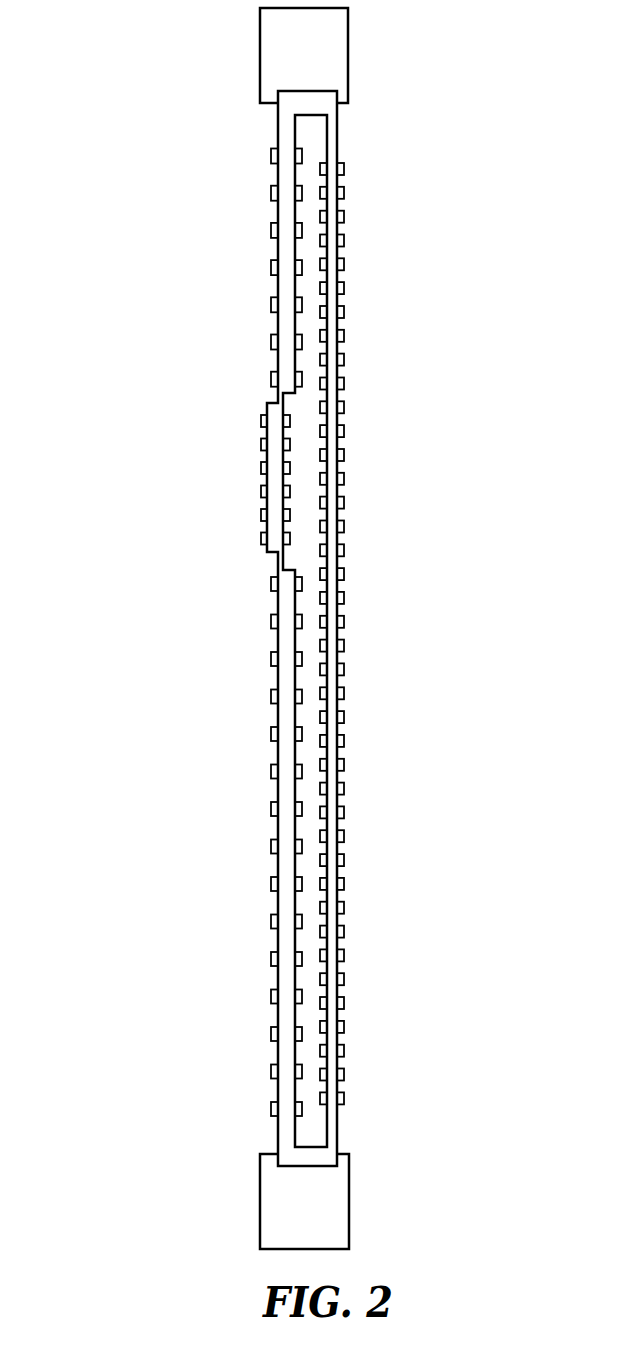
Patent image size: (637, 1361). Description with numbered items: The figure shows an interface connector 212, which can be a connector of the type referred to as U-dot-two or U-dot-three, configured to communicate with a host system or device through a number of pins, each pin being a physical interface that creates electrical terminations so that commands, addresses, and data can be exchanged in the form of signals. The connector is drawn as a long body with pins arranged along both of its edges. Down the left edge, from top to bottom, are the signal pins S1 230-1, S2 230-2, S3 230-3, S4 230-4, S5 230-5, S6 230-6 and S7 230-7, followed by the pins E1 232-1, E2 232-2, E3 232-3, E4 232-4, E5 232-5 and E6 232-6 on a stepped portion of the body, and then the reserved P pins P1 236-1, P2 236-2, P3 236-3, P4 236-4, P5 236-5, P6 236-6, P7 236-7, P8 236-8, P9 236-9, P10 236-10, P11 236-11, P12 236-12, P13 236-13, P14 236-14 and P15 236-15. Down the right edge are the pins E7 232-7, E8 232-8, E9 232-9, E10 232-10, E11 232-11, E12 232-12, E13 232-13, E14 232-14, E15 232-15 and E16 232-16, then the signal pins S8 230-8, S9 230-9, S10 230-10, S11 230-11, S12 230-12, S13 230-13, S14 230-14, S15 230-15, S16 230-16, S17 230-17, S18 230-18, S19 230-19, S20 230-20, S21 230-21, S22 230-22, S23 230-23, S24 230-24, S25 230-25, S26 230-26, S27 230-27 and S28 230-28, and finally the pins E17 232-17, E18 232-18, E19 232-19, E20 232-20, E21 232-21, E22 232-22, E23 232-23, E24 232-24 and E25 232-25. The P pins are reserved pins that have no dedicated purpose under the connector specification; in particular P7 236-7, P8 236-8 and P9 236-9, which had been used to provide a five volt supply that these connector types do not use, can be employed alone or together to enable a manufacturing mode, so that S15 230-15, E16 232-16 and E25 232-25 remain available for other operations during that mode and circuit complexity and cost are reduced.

The interface connector 212 is at (148, 32).
The S1 pin 230-1 is at (240, 158).
The S2 pin 230-2 is at (240, 195).
The S3 pin 230-3 is at (240, 232).
The S4 pin 230-4 is at (240, 269).
The S5 pin 230-5 is at (240, 306).
The S6 pin 230-6 is at (240, 344).
The S7 pin 230-7 is at (240, 381).
The S8 pin 230-8 is at (378, 410).
The S9 pin 230-9 is at (378, 434).
The S10 pin 230-10 is at (383, 458).
The S11 pin 230-11 is at (383, 482).
The S12 pin 230-12 is at (383, 506).
The S13 pin 230-13 is at (383, 530).
The S14 pin 230-14 is at (383, 553).
The S15 pin 230-15 is at (383, 577).
The S16 pin 230-16 is at (383, 601).
The S17 pin 230-17 is at (383, 625).
The S18 pin 230-18 is at (383, 649).
The S19 pin 230-19 is at (383, 672).
The S20 pin 230-20 is at (383, 696).
The S21 pin 230-21 is at (383, 720).
The S22 pin 230-22 is at (383, 744).
The S23 pin 230-23 is at (383, 768).
The S24 pin 230-24 is at (383, 792).
The S25 pin 230-25 is at (383, 815).
The S26 pin 230-26 is at (383, 839).
The S27 pin 230-27 is at (383, 863).
The S28 pin 230-28 is at (383, 887).
The E1 pin 232-1 is at (230, 423).
The E2 pin 232-2 is at (230, 446).
The E3 pin 232-3 is at (230, 470).
The E4 pin 232-4 is at (230, 494).
The E5 pin 232-5 is at (230, 517).
The E6 pin 232-6 is at (230, 540).
The E7 pin 232-7 is at (378, 172).
The E8 pin 232-8 is at (378, 196).
The E9 pin 232-9 is at (378, 220).
The E10 pin 232-10 is at (383, 244).
The E11 pin 232-11 is at (383, 267).
The E12 pin 232-12 is at (383, 291).
The E13 pin 232-13 is at (383, 315).
The E14 pin 232-14 is at (383, 339).
The E15 pin 232-15 is at (383, 363).
The E16 pin 232-16 is at (383, 386).
The E17 pin 232-17 is at (383, 911).
The E18 pin 232-18 is at (383, 935).
The E19 pin 232-19 is at (383, 958).
The E20 pin 232-20 is at (383, 982).
The E21 pin 232-21 is at (383, 1006).
The E22 pin 232-22 is at (383, 1030).
The E23 pin 232-23 is at (383, 1054).
The E24 pin 232-24 is at (383, 1078).
The E25 pin 232-25 is at (383, 1101).
The P1 pin 236-1 is at (240, 586).
The P2 pin 236-2 is at (240, 624).
The P3 pin 236-3 is at (240, 661).
The P4 pin 236-4 is at (240, 698).
The P5 pin 236-5 is at (240, 736).
The P6 pin 236-6 is at (240, 774).
The P7 pin 236-7 is at (240, 811).
The P8 pin 236-8 is at (240, 848).
The P9 pin 236-9 is at (240, 886).
The P10 pin 236-10 is at (236, 924).
The P11 pin 236-11 is at (236, 961).
The P12 pin 236-12 is at (236, 998).
The P13 pin 236-13 is at (236, 1036).
The P14 pin 236-14 is at (236, 1074).
The P15 pin 236-15 is at (236, 1111).